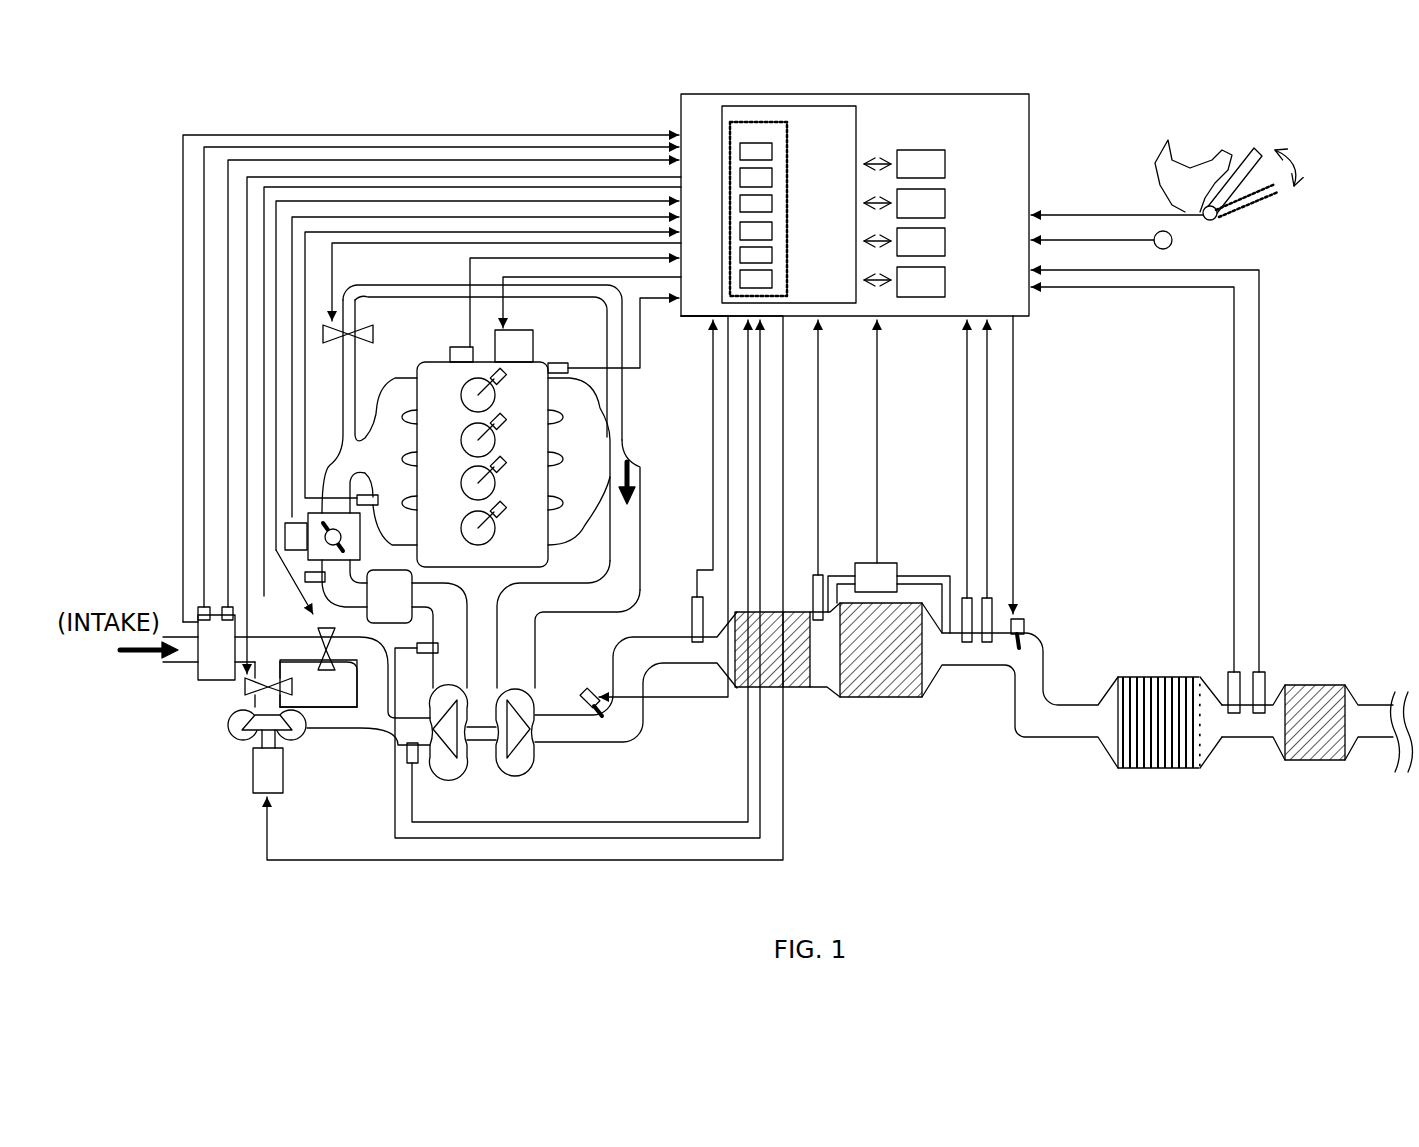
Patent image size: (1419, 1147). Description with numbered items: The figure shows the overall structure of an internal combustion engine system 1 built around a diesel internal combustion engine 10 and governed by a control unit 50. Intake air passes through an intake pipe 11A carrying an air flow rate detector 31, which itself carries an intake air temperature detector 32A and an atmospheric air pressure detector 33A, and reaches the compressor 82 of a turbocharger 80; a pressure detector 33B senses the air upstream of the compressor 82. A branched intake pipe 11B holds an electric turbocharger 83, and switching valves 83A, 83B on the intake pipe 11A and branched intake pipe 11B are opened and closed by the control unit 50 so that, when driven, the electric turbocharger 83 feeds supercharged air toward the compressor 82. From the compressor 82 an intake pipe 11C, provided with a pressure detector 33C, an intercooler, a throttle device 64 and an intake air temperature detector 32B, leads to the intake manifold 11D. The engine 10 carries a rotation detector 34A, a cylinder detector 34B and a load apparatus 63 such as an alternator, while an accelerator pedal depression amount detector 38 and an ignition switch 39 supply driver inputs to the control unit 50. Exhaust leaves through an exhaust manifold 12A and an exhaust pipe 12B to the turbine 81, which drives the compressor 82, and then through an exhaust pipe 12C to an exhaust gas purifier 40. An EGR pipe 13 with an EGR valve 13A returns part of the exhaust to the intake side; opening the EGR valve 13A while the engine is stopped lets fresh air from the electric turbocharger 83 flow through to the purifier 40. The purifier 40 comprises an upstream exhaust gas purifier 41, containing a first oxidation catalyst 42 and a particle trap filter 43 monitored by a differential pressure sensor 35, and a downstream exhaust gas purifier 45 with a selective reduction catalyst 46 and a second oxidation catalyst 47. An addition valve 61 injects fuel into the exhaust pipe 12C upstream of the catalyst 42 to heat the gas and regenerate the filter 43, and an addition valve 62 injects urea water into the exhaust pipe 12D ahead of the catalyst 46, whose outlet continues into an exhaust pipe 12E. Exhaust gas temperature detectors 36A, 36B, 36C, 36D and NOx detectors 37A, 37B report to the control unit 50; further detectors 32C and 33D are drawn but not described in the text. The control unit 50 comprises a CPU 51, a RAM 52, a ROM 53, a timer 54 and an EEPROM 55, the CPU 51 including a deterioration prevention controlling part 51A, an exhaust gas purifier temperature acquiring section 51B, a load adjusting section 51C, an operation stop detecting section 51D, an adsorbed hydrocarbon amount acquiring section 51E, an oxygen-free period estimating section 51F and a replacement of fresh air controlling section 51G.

The internal combustion engine system 1 is at (170, 282).
The internal combustion engine 10 is at (410, 284).
The intake pipe 11A is at (298, 636).
The branched intake pipe 11B is at (254, 697).
The intake pipe 11C is at (428, 675).
The intake manifold 11D is at (376, 393).
The exhaust manifold 12A is at (600, 410).
The exhaust pipe 12B is at (648, 574).
The exhaust pipe 12C is at (576, 746).
The exhaust pipe 12D is at (1054, 690).
The exhaust pipe 12E is at (1245, 743).
The EGR pipe 13 is at (628, 429).
The EGR valve 13A is at (318, 333).
The air flow rate detector 31 is at (205, 681).
The intake air temperature detector 32A is at (219, 604).
The intake air temperature detector 32B is at (293, 575).
The coolant temperature sensor 32C is at (573, 368).
The atmospheric air pressure detector 33A is at (200, 604).
The pressure detector 33B is at (400, 772).
The pressure detector 33C is at (443, 642).
The intake manifold pressure sensor 33D is at (358, 488).
The rotation detector 34A is at (452, 347).
The cylinder detector 34B is at (452, 346).
The differential pressure sensor 35 is at (881, 562).
The exhaust gas temperature detector 36A is at (688, 628).
The exhaust gas temperature detector 36B is at (821, 572).
The exhaust gas temperature detector 36C is at (965, 645).
The exhaust gas temperature detector 36D is at (1226, 671).
The NOx detector 37A is at (987, 646).
The NOx detector 37B is at (1269, 671).
The accelerator pedal depression amount detector 38 is at (1224, 213).
The ignition switch 39 is at (1176, 240).
The exhaust gas purifier 40 is at (1006, 605).
The upstream exhaust gas purifier 41 is at (775, 581).
The first oxidation catalyst 42 is at (800, 665).
The particle trap filter 43 is at (872, 670).
The downstream exhaust gas purifier 45 is at (1181, 573).
The selective reduction catalyst 46 is at (1147, 748).
The second oxidation catalyst 47 is at (1349, 751).
The control unit 50 is at (1033, 186).
The CPU 51 is at (716, 208).
The deterioration prevention controlling part 51A is at (787, 125).
The exhaust gas purifier temperature acquiring section 51B is at (772, 152).
The load adjusting section 51C is at (772, 178).
The operation stop detecting section 51D is at (772, 204).
The adsorbed hydrocarbon amount acquiring section 51E is at (772, 231).
The oxygen-free period estimating section 51F is at (772, 255).
The replacement of fresh air controlling section 51G is at (772, 279).
The RAM 52 is at (948, 170).
The ROM 53 is at (948, 211).
The timer 54 is at (948, 250).
The EEPROM 55 is at (948, 287).
The addition valve 61 is at (588, 690).
The addition valve 62 is at (1028, 620).
The load apparatus 63 is at (536, 346).
The throttle device 64 is at (369, 540).
The turbocharger 80 is at (513, 802).
The turbine 81 is at (522, 782).
The compressor 82 is at (444, 784).
The electric turbocharger 83 is at (248, 768).
The switching valve 83A is at (292, 704).
The switching valve 83B is at (242, 688).